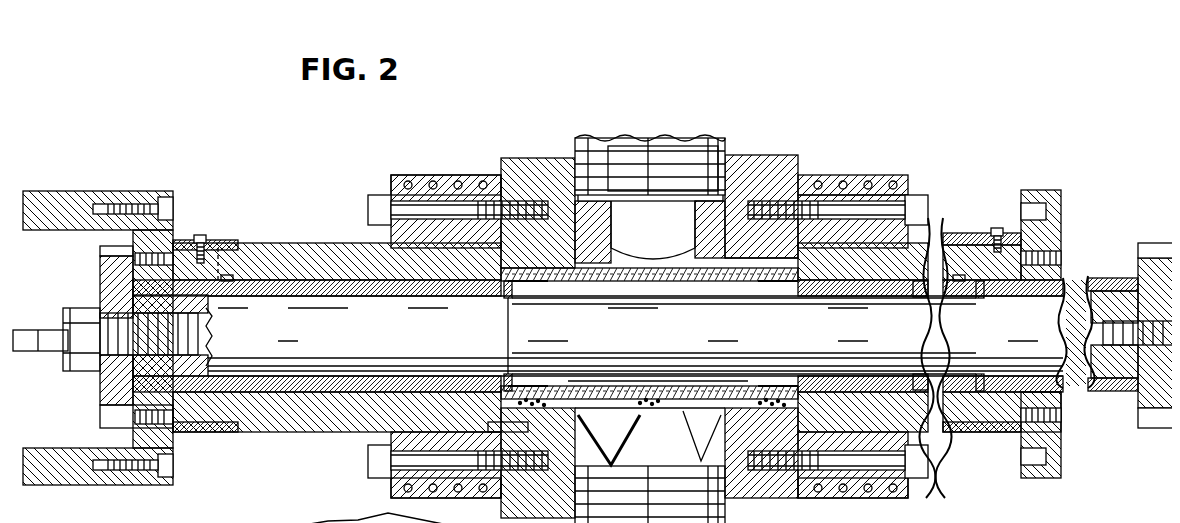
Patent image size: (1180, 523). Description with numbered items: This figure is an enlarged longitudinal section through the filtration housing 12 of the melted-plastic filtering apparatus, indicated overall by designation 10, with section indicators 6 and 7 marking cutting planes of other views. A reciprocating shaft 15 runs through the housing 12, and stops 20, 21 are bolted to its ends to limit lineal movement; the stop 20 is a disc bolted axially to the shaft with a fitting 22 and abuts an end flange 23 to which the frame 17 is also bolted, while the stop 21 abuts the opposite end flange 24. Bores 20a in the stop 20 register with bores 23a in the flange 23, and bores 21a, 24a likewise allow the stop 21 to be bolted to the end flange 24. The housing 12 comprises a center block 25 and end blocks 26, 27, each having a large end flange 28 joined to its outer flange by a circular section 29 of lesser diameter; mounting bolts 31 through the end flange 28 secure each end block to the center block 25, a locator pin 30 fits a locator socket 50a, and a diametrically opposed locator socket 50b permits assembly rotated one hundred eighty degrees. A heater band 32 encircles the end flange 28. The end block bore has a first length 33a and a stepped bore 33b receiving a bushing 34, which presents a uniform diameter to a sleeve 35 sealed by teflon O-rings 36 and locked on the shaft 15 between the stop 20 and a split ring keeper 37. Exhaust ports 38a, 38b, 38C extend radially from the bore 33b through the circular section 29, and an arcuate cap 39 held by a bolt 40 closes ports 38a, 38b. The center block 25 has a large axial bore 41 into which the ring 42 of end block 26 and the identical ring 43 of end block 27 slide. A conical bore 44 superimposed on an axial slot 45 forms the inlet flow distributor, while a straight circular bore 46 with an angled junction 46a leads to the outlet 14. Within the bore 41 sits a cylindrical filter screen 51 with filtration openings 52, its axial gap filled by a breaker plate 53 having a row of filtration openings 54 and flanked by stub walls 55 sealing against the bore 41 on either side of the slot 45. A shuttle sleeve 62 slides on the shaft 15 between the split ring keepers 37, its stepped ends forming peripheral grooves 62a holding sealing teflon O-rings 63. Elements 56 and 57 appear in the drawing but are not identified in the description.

The section line 6- 6 is at (640, 135).
The section line 7- 7 is at (222, 200).
The roller assembly 10 is at (962, 97).
The filtration housing 12 is at (778, 151).
The outlet 14 is at (705, 132).
The reciprocating shaft 15 is at (635, 340).
The frame 17 is at (48, 183).
The stop 20 is at (92, 272).
The bores 20a is at (98, 252).
The stop 21 is at (1131, 334).
The bores 21a is at (1150, 235).
The fitting 22 is at (30, 345).
The end flange 23 is at (145, 183).
The bores 23a is at (168, 245).
The end flange 24 is at (1053, 185).
The bores 24a is at (1053, 247).
The center block 25 is at (740, 160).
The end block 26 is at (285, 233).
The end block 27 is at (932, 228).
The end flange 28 is at (423, 178).
The circular section 29 is at (310, 424).
The locator pin 30 is at (480, 420).
The mounting bolts 31 is at (366, 190).
The heater band 32 is at (450, 165).
The bore 33a is at (373, 288).
The stepped bore 33b is at (619, 334).
The bushing 34 is at (215, 352).
The sleeve 35 is at (425, 288).
The teflon O-rings 36 is at (228, 272).
The split ring keeper 37 is at (496, 280).
The exhaust port 38a is at (978, 213).
The exhaust port 38b is at (238, 233).
The exhaust port 38C is at (218, 418).
The arcuate cap 39 is at (245, 232).
The bolt 40 is at (200, 228).
The axial bore 41 is at (550, 260).
The ring 42 is at (510, 260).
The ring 43 is at (730, 250).
The conical bore 44 is at (660, 478).
The slot 45 is at (600, 427).
The straight circular bore 46 is at (663, 168).
The angled junction 46a is at (645, 250).
The locator socket 50a is at (649, 463).
The locator socket 50b is at (513, 213).
The filter screen 51 is at (687, 379).
The filtration openings 52 is at (515, 340).
The breaker plate 53 is at (580, 383).
The filtration openings 54 is at (520, 378).
The stub walls 55 is at (672, 400).
The bearing 56 is at (647, 377).
The block 57 is at (700, 247).
The shuttle sleeve 62 is at (880, 290).
The peripheral grooves 62a is at (745, 288).
The teflon O-ring 63 is at (765, 290).